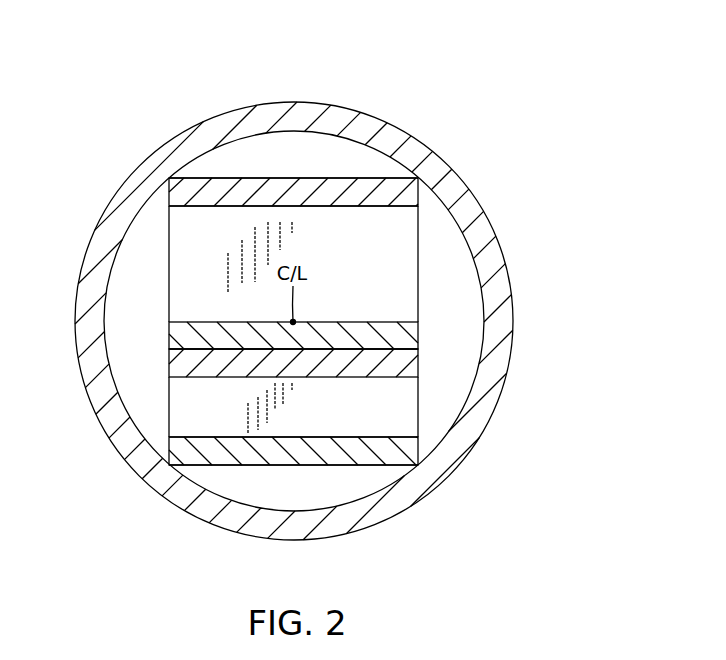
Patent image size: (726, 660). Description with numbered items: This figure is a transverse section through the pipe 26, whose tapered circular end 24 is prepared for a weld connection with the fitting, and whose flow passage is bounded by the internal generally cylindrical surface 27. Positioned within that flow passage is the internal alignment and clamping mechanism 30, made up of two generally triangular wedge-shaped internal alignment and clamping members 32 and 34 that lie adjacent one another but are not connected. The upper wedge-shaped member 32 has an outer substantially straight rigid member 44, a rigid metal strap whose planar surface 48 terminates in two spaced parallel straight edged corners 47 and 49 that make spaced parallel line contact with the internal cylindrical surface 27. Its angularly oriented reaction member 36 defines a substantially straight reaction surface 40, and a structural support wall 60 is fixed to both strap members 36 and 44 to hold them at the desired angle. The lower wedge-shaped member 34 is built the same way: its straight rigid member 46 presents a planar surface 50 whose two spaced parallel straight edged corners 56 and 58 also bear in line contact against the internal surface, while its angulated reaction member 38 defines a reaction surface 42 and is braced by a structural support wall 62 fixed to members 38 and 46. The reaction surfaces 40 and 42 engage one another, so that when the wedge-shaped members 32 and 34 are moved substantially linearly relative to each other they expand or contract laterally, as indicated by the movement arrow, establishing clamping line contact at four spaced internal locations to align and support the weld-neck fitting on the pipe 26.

The circular tapered end 24 is at (267, 295).
The pipe 26 is at (297, 102).
The internal generally cylindrical surface 27 is at (106, 348).
The internal alignment and clamping mechanism 30 is at (322, 172).
The wedge-shaped internal alignment and clamping member 32 is at (386, 178).
The wedge-shaped internal alignment and clamping member 34 is at (384, 467).
The reaction member 36 is at (203, 334).
The reaction member 38 is at (203, 362).
The reaction surface 40 is at (387, 350).
The reaction surface 42 is at (358, 348).
The substantially straight rigid member 44 is at (293, 134).
The substantially straight rigid member 46 is at (195, 453).
The straight edged corner 47 is at (169, 178).
The straight planar surface 48 is at (203, 178).
The straight edged corner 49 is at (418, 178).
The straight planar surface 50 is at (280, 505).
The straight edged corner 56 is at (169, 465).
The straight edged corner 58 is at (418, 465).
The structural support wall 60 is at (395, 236).
The structural support wall 62 is at (405, 425).